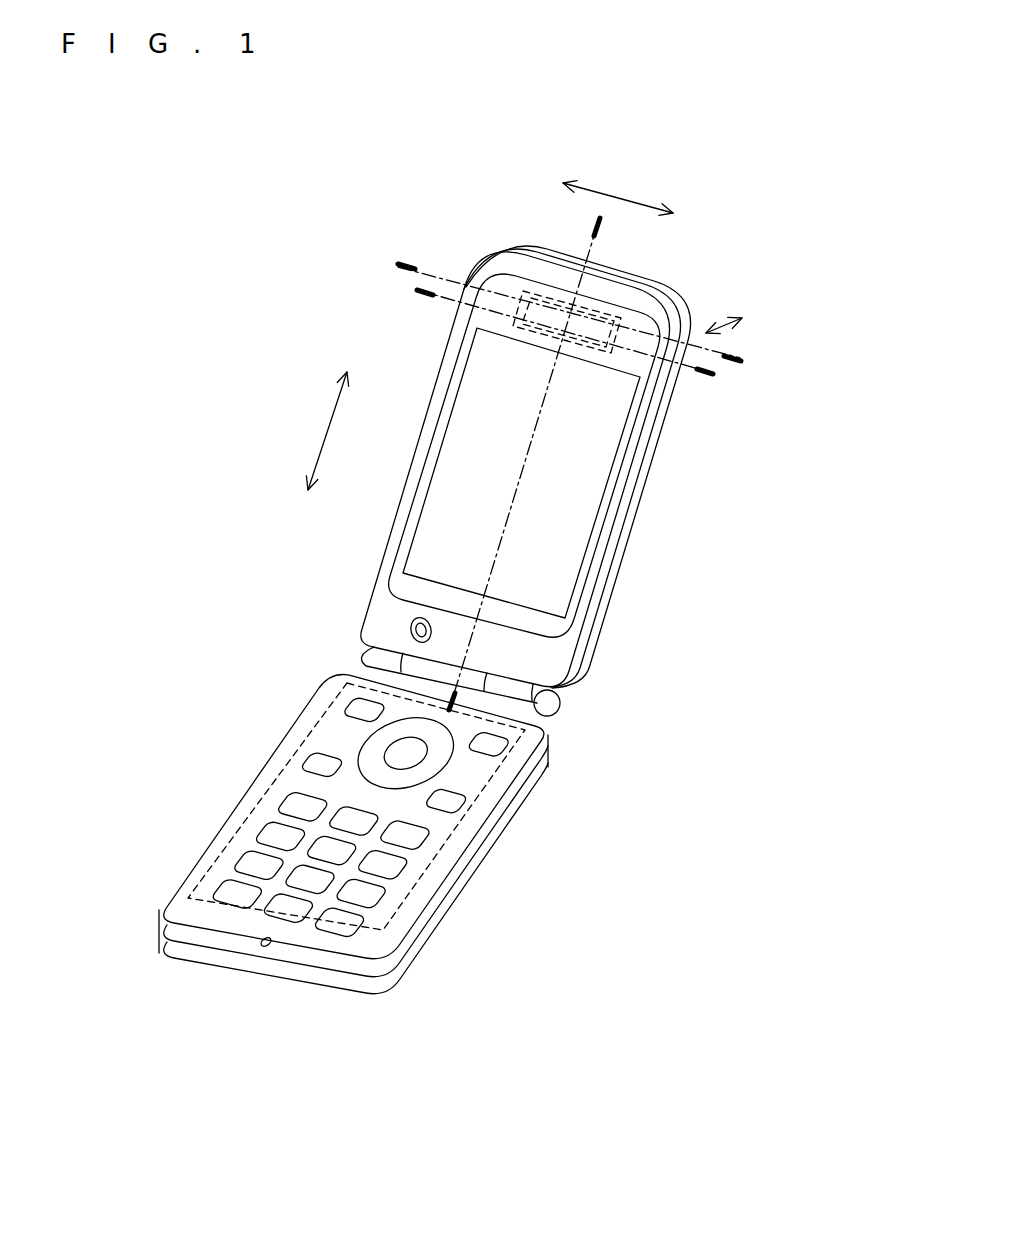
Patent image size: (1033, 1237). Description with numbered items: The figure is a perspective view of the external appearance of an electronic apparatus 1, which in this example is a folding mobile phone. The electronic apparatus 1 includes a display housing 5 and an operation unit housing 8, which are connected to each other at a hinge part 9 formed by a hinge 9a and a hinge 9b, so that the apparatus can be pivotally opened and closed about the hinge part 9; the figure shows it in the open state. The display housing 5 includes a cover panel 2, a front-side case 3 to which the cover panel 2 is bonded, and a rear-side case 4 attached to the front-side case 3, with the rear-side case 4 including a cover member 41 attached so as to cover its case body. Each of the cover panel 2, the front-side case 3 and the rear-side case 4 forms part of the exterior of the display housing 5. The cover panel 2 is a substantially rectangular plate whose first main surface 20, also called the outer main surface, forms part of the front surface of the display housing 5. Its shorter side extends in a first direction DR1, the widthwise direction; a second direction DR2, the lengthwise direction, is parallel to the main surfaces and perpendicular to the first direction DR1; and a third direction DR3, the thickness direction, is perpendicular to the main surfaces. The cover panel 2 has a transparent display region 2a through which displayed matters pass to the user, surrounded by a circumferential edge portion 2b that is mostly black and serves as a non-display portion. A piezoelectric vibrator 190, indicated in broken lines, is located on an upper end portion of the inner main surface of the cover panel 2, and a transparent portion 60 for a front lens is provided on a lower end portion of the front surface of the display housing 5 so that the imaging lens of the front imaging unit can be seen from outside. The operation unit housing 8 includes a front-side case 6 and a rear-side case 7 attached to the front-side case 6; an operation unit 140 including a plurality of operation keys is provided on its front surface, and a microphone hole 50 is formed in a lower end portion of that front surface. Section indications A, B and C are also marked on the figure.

The electronic apparatus 1 is at (488, 237).
The cover panel 2 is at (463, 432).
The first main surface 20 is at (457, 460).
The display region 2a is at (447, 492).
The circumferential edge portion 2b is at (410, 583).
The front-side case 3 is at (633, 480).
The rear-side case 4 is at (632, 512).
The cover member 41 is at (628, 548).
The display housing 5 is at (625, 580).
The transparent portion for a front lens 60 is at (411, 628).
The piezoelectric vibrator 190 is at (540, 290).
The hinge part 9 is at (664, 653).
The hinge 9a is at (476, 683).
The hinge 9b is at (365, 660).
The operation unit housing 8 is at (534, 866).
The front-side case 6 is at (437, 903).
The rear-side case 7 is at (418, 940).
The operation unit 140 is at (487, 793).
The microphone hole 50 is at (268, 948).
The section line A is at (604, 233).
The section line B is at (404, 273).
The section line C is at (423, 298).
The first direction DR1 is at (618, 190).
The second direction DR2 is at (315, 431).
The third direction DR3 is at (745, 321).